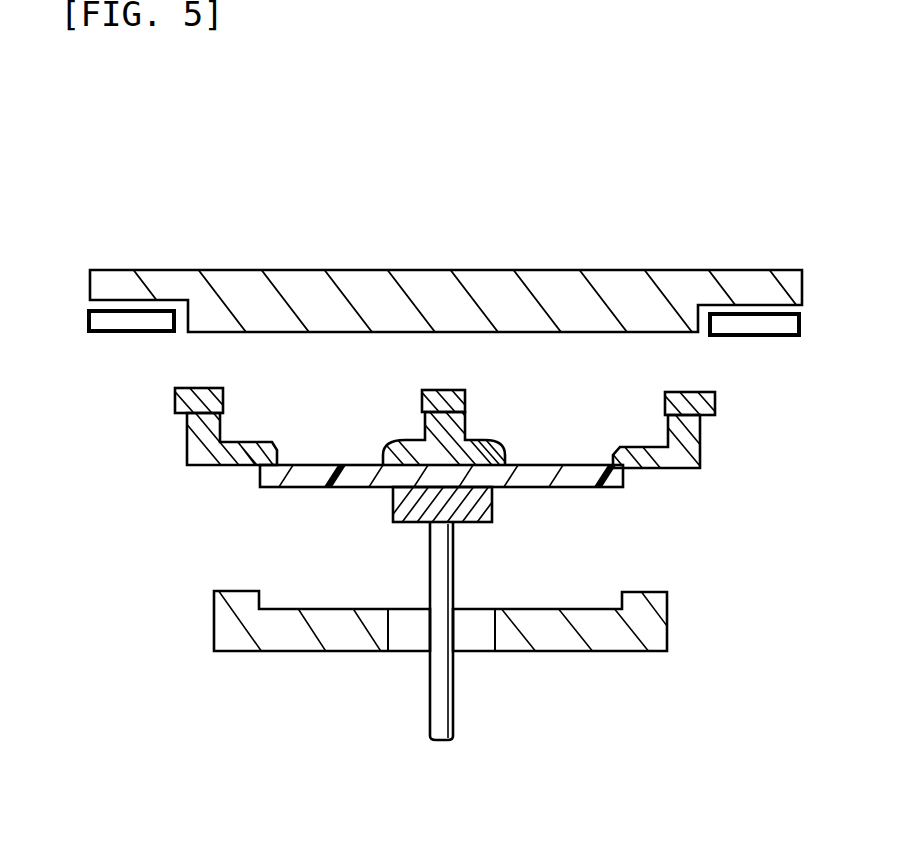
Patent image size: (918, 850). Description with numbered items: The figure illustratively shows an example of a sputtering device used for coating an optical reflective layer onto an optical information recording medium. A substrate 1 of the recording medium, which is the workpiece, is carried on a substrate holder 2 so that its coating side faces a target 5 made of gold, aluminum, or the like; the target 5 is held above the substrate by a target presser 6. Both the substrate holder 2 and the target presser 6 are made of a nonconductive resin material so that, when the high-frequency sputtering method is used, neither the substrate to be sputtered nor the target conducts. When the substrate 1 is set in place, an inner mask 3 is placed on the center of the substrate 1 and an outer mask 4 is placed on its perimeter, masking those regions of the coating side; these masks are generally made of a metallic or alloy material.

The substrate 1 is at (625, 477).
The substrate holder 2 is at (262, 652).
The inner mask 3 is at (490, 432).
The outer mask 4 is at (700, 437).
The target 5 is at (622, 276).
The target presser 6 is at (120, 316).